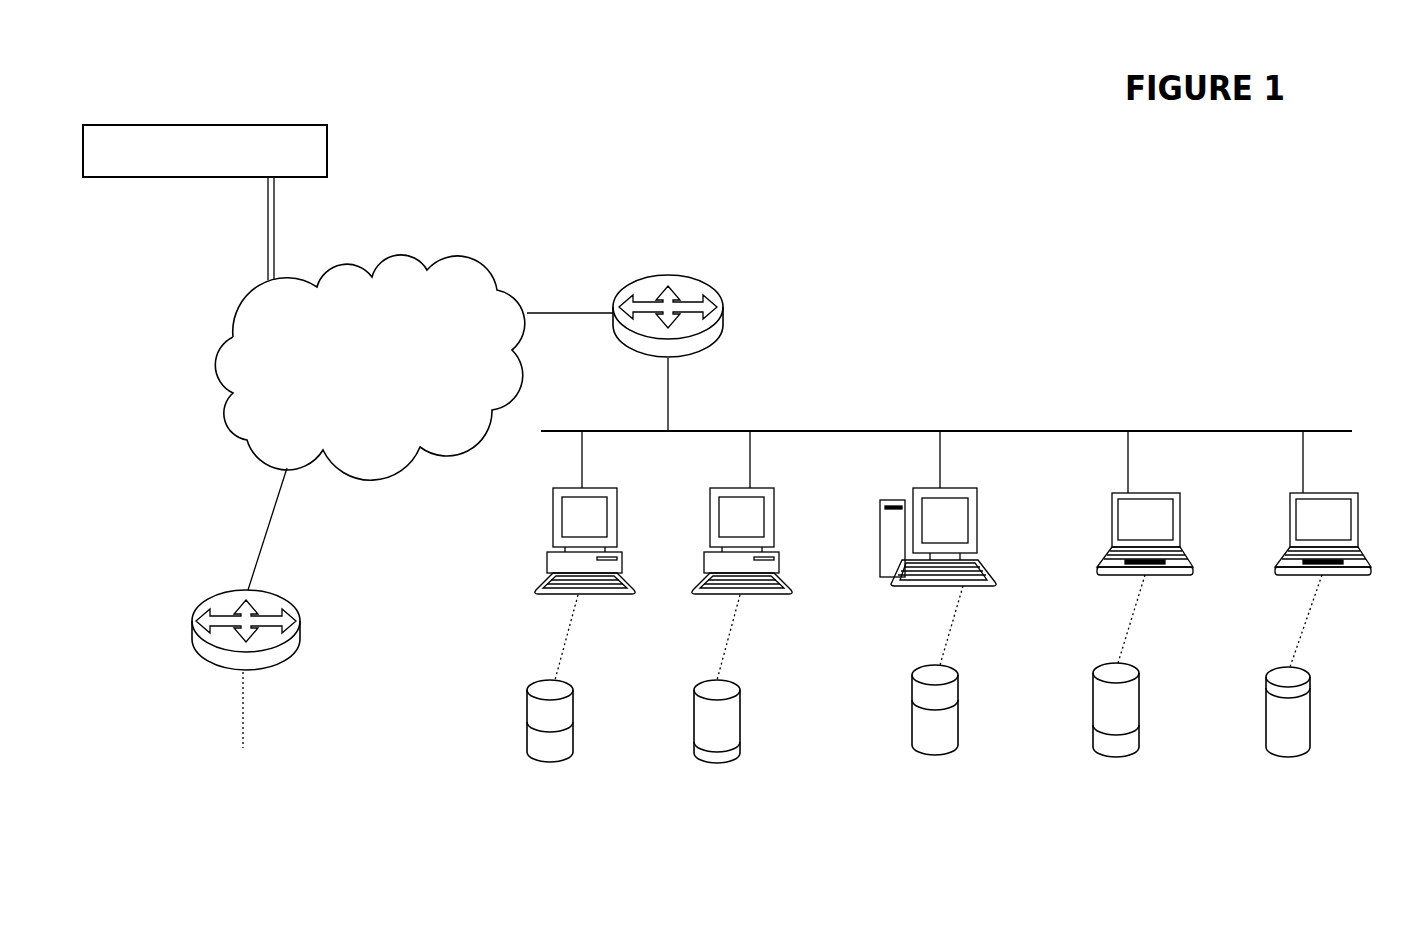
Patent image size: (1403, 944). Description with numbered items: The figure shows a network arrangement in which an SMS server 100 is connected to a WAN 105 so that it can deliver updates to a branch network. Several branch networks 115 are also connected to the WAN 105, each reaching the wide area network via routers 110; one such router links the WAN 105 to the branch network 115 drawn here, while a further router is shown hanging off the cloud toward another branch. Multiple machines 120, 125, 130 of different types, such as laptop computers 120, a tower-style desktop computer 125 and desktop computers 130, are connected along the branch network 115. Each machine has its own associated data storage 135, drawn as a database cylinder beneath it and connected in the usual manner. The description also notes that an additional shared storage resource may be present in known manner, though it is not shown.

The SMS server 100 is at (233, 125).
The WAN 105 is at (414, 422).
The router 110 is at (690, 276).
The branch network 115 is at (1032, 431).
The machine 120 is at (1120, 575).
The machine 125 is at (913, 587).
The machine 130 is at (553, 595).
The data storage 135 is at (548, 763).